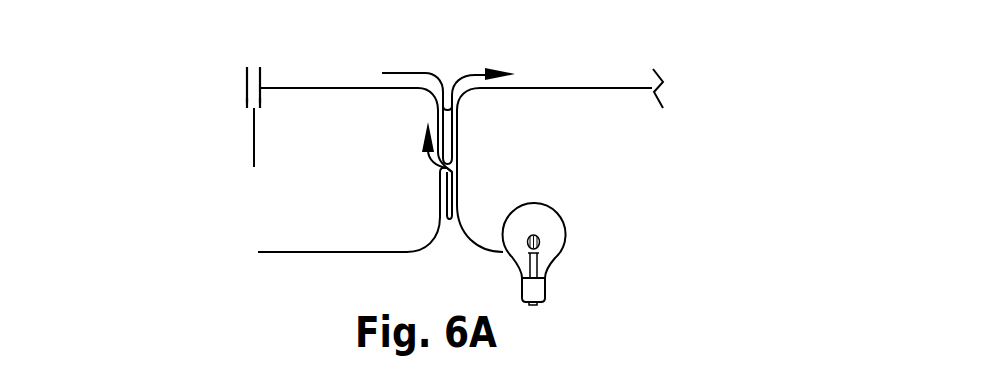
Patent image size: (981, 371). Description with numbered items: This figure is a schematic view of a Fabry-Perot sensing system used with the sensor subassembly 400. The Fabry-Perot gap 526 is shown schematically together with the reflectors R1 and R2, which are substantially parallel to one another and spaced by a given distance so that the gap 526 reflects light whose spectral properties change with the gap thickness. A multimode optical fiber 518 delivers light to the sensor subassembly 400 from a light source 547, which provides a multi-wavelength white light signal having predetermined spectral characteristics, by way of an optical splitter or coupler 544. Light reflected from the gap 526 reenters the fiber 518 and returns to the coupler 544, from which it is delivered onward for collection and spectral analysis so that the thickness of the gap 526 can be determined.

The sensor subassembly 400 is at (210, 47).
The optical fiber 518 is at (303, 88).
The Fabry-Perot gap 526 is at (252, 153).
The optical splitter (coupler) 544 is at (457, 167).
The light source 547 is at (563, 218).
The reflector R1 is at (262, 100).
The reflector R2 is at (247, 100).